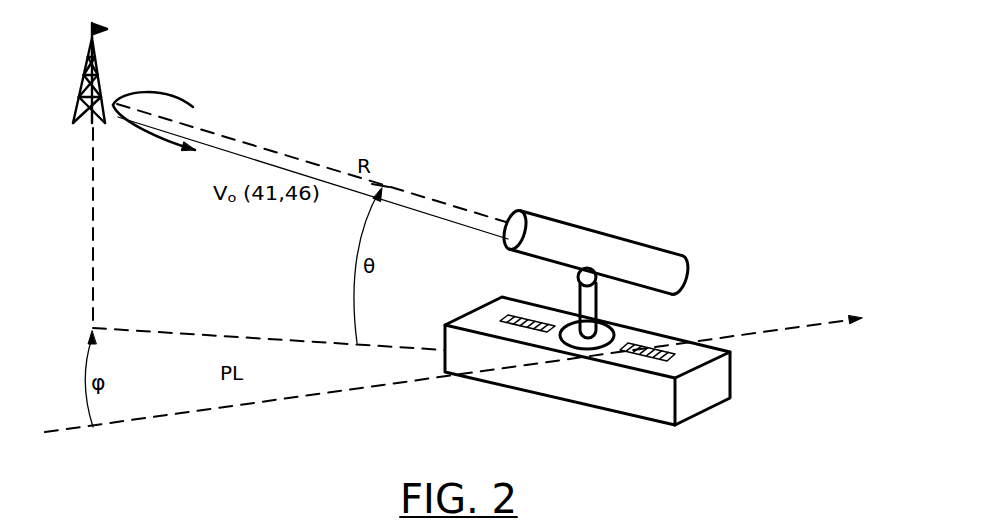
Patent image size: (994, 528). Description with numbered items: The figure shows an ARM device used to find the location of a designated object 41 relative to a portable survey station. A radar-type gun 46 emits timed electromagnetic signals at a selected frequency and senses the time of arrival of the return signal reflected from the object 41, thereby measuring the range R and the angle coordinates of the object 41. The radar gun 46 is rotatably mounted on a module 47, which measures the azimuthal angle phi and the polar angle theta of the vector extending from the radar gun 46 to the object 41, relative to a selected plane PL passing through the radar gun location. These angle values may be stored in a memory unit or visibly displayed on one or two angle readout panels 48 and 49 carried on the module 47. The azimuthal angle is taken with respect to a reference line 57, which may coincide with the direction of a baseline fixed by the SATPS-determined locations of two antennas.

The object 41 is at (95, 58).
The radar-type gun 46 is at (566, 245).
The module 47 is at (707, 387).
The angle readout panel 48 is at (512, 332).
The angle readout panel 49 is at (627, 357).
The reference line 57 is at (232, 407).